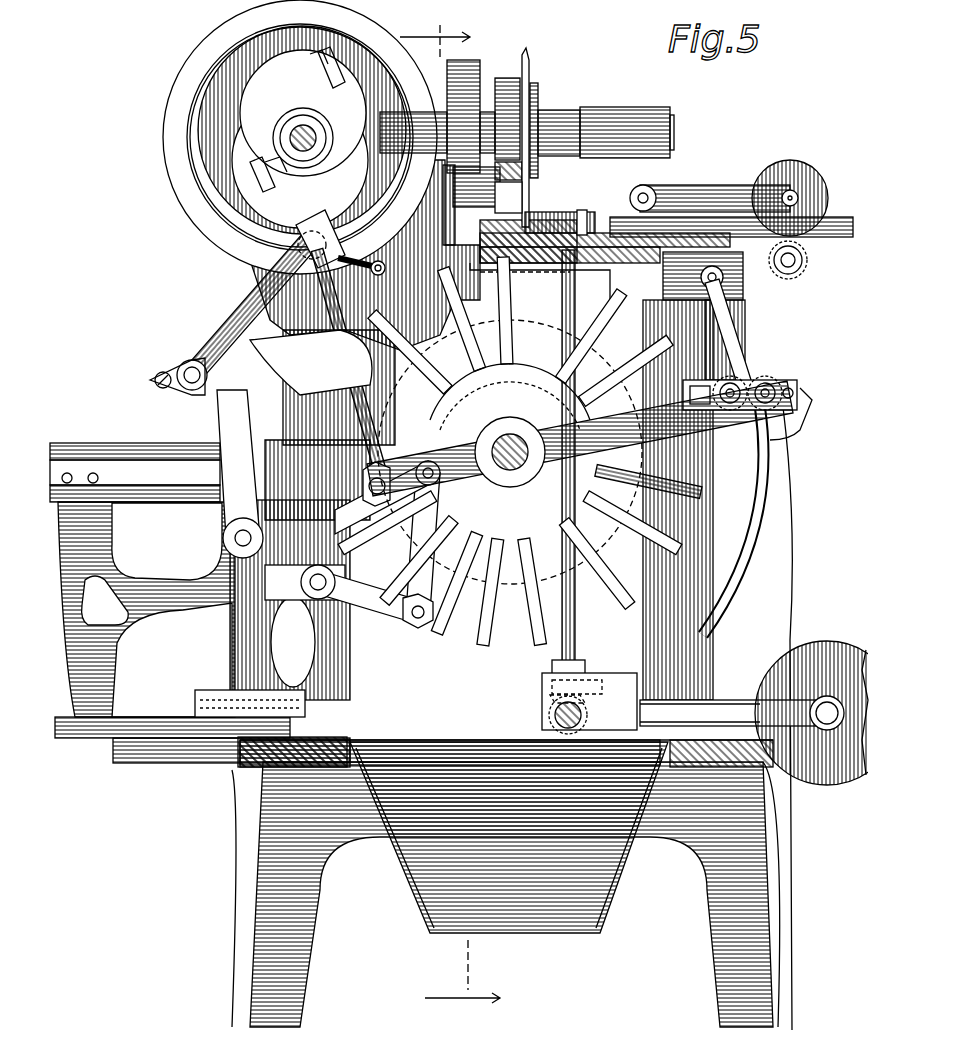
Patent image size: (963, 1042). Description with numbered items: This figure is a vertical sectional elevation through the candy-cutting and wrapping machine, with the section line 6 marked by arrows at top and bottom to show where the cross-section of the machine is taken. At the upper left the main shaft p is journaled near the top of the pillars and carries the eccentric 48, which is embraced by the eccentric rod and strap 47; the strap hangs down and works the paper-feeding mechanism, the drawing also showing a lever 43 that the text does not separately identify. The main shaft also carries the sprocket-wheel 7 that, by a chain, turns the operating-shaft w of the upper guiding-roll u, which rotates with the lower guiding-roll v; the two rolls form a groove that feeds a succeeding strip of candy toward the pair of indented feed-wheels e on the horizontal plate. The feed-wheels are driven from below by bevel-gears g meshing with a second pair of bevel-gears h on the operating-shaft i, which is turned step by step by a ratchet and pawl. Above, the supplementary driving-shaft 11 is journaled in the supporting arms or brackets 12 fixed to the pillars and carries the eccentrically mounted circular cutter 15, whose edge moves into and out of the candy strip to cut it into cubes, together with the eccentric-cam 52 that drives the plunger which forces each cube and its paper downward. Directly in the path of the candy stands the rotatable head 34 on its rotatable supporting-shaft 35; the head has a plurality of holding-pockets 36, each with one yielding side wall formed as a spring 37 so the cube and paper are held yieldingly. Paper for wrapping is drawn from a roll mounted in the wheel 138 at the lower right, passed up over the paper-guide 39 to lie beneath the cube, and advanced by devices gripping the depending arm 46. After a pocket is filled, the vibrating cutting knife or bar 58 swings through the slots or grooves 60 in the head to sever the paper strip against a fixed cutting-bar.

The section line 6 is at (450, 519).
The sprocket-wheel 7 is at (508, 197).
The supplementary driving-shaft 11 is at (674, 125).
The supporting arms or brackets 12 is at (525, 152).
The circular cutter 15 is at (530, 64).
The rotatable head 34 is at (520, 451).
The rotatable supporting-shaft 35 is at (512, 445).
The holding-pockets 36 is at (436, 632).
The spring 37 is at (448, 645).
The paper-guide 39 is at (752, 352).
The lever arm 43 is at (580, 438).
The depending arm 46 is at (722, 580).
The eccentric rod and strap 47 is at (233, 233).
The eccentric 48 is at (243, 176).
The eccentric-cam 52 is at (506, 78).
The vibrating cutting knife or bar 58 is at (452, 318).
The slots or grooves 60 is at (509, 517).
The wheel 138 is at (818, 648).
The main shaft p is at (300, 138).
The indented feed-wheels e is at (577, 235).
The guiding-roll u is at (782, 160).
The operating-shaft w is at (800, 198).
The guiding-roll v is at (808, 260).
The bevel-gears g is at (585, 702).
The bevel-gears h is at (589, 704).
The operating-shaft i is at (553, 715).